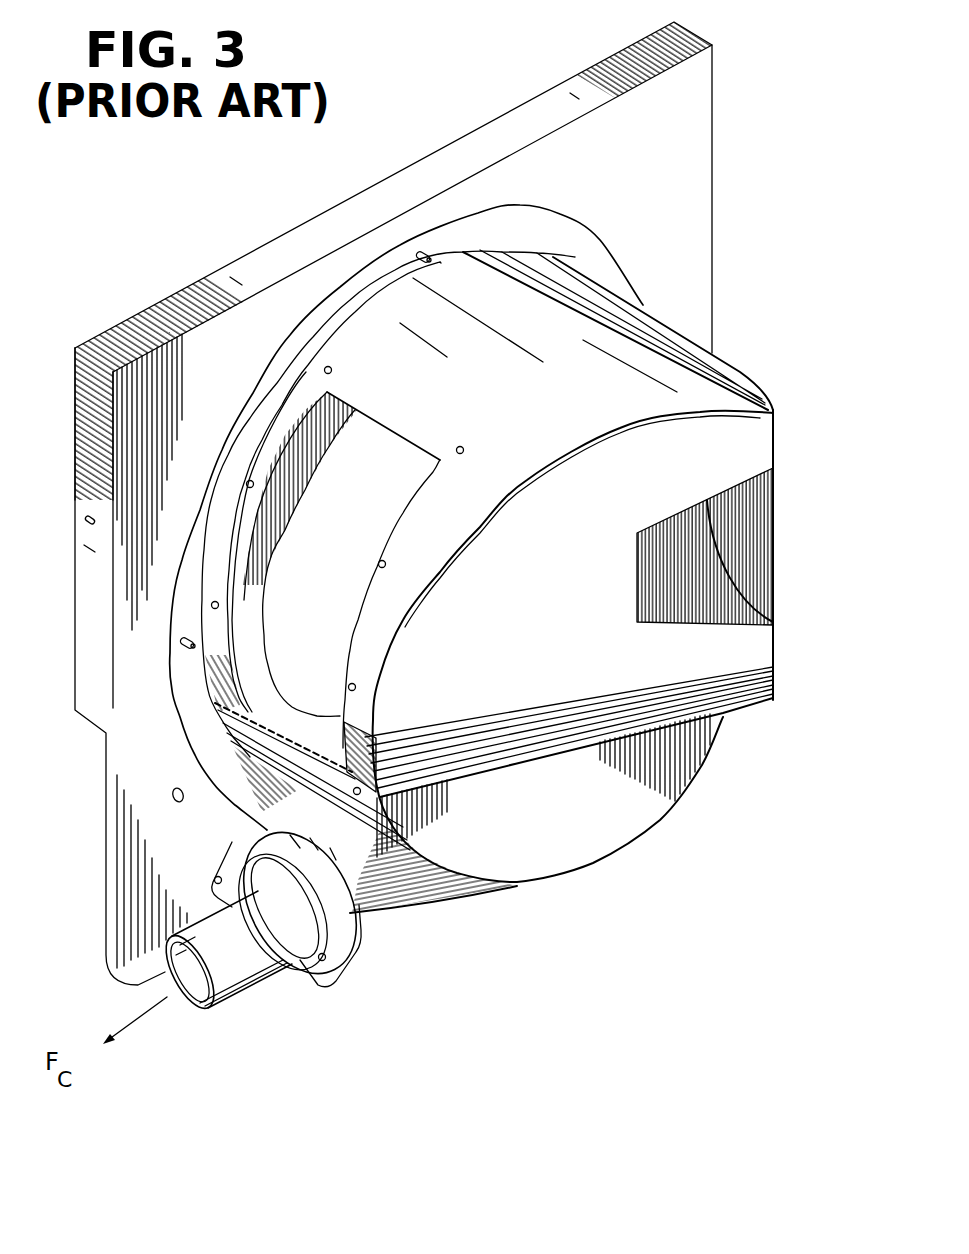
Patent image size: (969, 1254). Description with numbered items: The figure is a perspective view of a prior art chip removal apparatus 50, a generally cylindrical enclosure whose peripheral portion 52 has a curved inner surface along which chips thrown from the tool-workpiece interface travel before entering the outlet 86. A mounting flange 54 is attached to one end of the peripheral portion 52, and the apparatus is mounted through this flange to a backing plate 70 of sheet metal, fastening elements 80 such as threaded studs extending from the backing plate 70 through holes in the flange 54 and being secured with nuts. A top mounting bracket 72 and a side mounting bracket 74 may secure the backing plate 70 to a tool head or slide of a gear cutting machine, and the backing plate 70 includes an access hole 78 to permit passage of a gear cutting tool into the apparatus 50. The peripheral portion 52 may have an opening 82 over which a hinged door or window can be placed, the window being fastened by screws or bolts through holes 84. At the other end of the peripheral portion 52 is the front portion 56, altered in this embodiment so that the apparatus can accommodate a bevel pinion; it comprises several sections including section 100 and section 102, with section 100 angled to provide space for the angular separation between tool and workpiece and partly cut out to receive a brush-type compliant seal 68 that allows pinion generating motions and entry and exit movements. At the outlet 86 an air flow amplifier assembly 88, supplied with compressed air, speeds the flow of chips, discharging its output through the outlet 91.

The chip removal apparatus 50 is at (727, 330).
The peripheral portion 52 is at (493, 290).
The mounting flange 54 is at (580, 247).
The front portion 56 is at (611, 455).
The compliant seal 68 is at (777, 510).
The backing plate 70 is at (365, 503).
The top mounting bracket 72 is at (373, 200).
The side mounting bracket 74 is at (92, 577).
The access hole 78 is at (365, 504).
The fastening elements 80 is at (182, 645).
The opening 82 is at (393, 430).
The holes 84 is at (458, 455).
The outlet 86 is at (413, 888).
The air flow amplifier assembly 88 is at (299, 950).
The outlet 91 is at (238, 990).
The front portion section 100 is at (575, 594).
The front portion section 102 is at (582, 838).